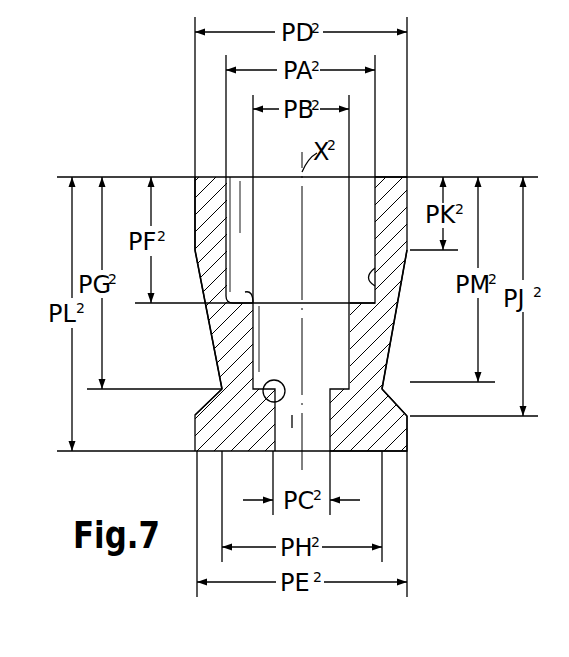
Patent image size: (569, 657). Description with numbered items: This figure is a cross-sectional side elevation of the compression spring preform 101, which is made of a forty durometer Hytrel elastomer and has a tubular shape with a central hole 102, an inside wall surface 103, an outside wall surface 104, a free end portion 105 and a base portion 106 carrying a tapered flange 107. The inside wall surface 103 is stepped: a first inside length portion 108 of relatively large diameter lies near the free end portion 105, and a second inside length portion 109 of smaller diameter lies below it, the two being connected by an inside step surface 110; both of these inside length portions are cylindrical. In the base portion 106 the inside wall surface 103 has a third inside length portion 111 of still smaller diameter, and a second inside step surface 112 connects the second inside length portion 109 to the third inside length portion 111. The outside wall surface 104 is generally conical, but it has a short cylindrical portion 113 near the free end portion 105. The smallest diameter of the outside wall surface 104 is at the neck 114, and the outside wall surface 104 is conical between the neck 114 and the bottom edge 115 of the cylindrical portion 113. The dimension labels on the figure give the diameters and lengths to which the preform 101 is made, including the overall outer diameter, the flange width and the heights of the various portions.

The compression spring preform 101 is at (440, 143).
The central hole 102 is at (312, 264).
The inside wall surface 103 is at (376, 270).
The outside wall surface 104 is at (388, 343).
The free end portion 105 is at (390, 178).
The base portion 106 is at (355, 420).
The tapered flange 107 is at (384, 392).
The first inside length portion 108 is at (225, 228).
The second inside length portion 109 is at (255, 345).
The inside step surface 110 is at (268, 283).
The third inside length portion 111 is at (329, 412).
The second inside step surface 112 is at (273, 404).
The short cylindrical portion 113 is at (195, 197).
The neck 114 is at (220, 388).
The bottom edge 115 is at (195, 250).